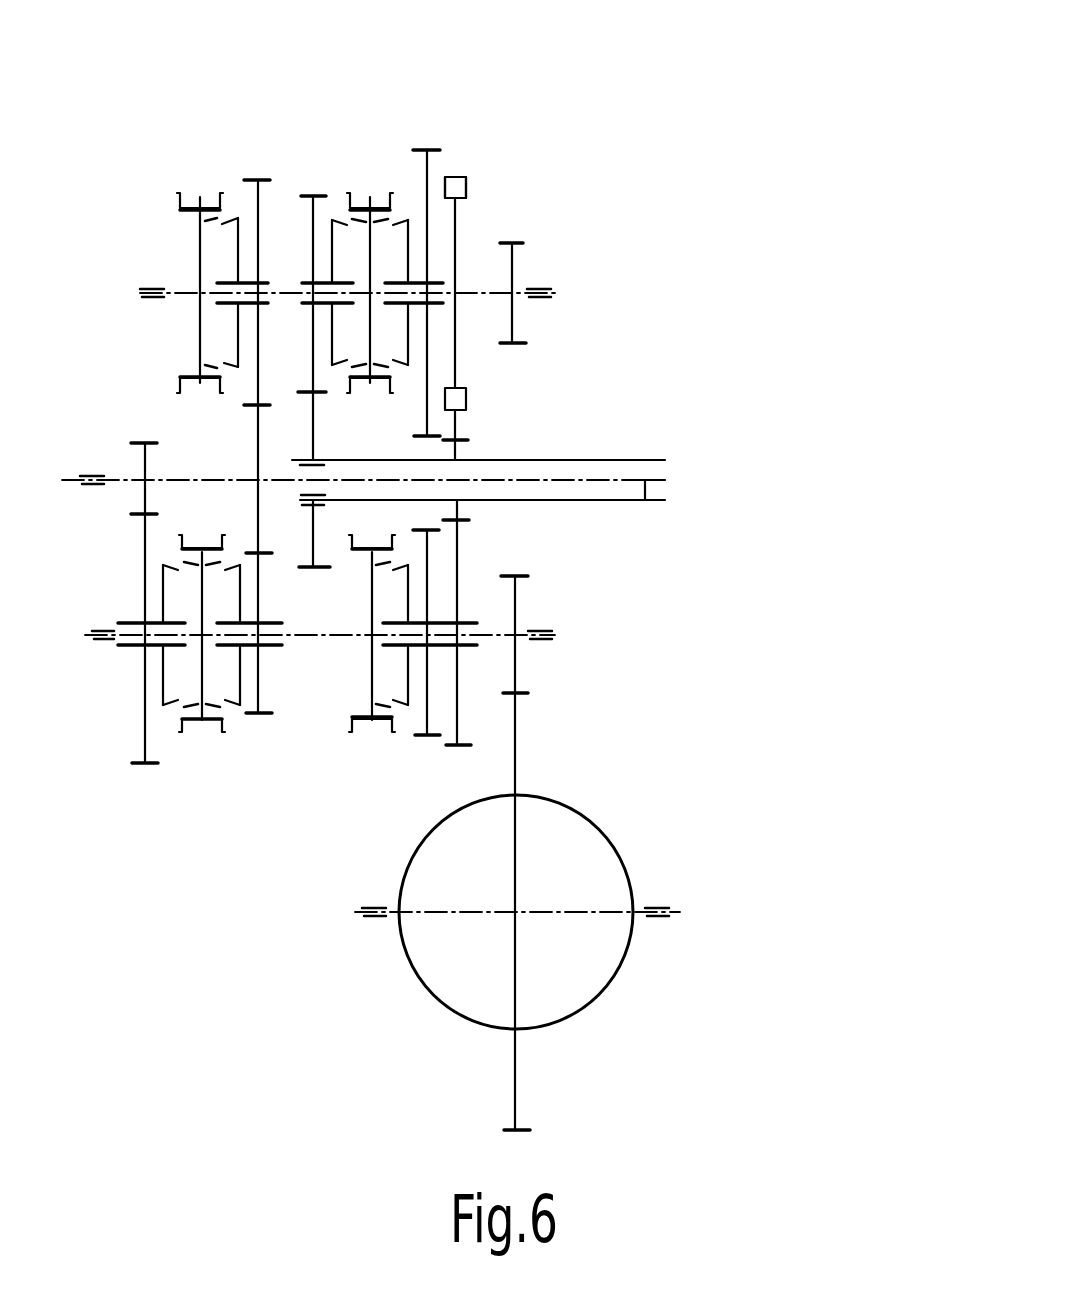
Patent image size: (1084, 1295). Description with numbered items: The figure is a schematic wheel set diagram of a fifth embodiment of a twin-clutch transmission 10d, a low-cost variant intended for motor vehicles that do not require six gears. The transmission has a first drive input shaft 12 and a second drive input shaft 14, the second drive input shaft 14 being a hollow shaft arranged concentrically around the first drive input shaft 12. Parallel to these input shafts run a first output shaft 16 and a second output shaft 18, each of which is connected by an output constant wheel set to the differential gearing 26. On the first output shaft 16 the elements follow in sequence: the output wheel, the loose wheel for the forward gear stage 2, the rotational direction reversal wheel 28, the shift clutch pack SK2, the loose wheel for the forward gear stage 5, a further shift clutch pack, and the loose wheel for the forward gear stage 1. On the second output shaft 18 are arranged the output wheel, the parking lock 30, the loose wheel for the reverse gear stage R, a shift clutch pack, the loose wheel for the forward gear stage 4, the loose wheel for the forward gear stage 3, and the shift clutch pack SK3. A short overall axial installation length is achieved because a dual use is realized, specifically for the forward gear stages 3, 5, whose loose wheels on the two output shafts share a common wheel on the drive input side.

The twin-clutch transmission 10d is at (752, 312).
The first drive input shaft 12 is at (645, 500).
The second drive input shaft 14 is at (622, 460).
The first output shaft 16 is at (522, 633).
The second output shaft 18 is at (520, 290).
The differential gearing 26 is at (618, 843).
The rotational direction reversal wheel 28 is at (432, 702).
The parking lock 30 is at (463, 182).
The forward gear stage 1 is at (144, 621).
The forward gear stage 2 is at (457, 642).
The forward gear stage 3 is at (257, 347).
The forward gear stage 4 is at (314, 362).
The forward gear stage 5 is at (259, 654).
The reverse gear stage R is at (426, 272).
The parking lock P is at (455, 300).
The shift clutch pack SK3 is at (200, 200).
The shift clutch pack SK2 is at (372, 732).